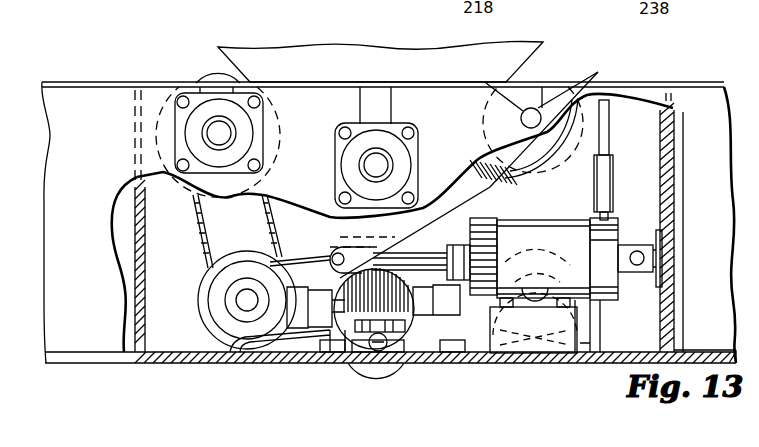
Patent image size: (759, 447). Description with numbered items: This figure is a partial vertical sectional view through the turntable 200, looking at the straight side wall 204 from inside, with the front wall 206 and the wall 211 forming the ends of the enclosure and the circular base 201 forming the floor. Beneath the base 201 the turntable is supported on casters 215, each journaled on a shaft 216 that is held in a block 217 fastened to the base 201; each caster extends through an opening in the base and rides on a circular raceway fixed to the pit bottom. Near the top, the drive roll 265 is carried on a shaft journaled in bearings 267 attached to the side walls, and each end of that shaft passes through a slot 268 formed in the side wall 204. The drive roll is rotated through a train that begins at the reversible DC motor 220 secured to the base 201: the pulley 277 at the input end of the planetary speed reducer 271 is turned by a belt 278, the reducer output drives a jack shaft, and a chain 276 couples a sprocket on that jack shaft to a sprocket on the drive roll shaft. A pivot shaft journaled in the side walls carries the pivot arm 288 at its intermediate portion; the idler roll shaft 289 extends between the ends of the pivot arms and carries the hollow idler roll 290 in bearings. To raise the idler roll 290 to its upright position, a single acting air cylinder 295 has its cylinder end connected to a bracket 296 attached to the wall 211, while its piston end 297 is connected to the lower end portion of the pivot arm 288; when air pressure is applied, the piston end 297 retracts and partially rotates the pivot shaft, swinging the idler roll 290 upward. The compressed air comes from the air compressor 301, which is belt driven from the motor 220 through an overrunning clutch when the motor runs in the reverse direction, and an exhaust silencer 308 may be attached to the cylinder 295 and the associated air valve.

The turntable 200 is at (683, 82).
The circular base 201 is at (508, 363).
The straight side wall 204 is at (72, 95).
The front wall 206 is at (147, 241).
The wall 211 is at (669, 186).
The caster 215 is at (402, 363).
The shaft 216 is at (378, 335).
The block 217 is at (378, 352).
The reversible DC motor 220 is at (577, 305).
The drive roll 265 is at (220, 80).
The bearing 267 is at (173, 100).
The slot 268 is at (181, 96).
The planetary speed reducer 271 is at (198, 332).
The chain 276 is at (210, 224).
The pulley 277 is at (232, 363).
The belt 278 is at (290, 255).
The pivot arm 288 is at (512, 180).
The idler roll shaft 289 is at (585, 85).
The hollow idler roll 290 is at (546, 65).
The single acting air cylinder 295 is at (561, 222).
The bracket 296 is at (659, 230).
The piston end 297 is at (427, 238).
The air compressor 301 is at (330, 363).
The exhaust silencer 308 is at (608, 150).